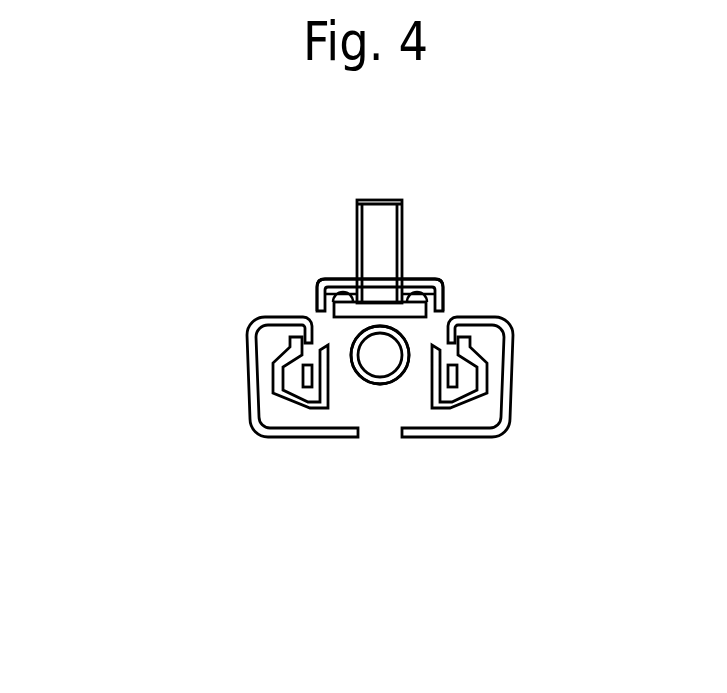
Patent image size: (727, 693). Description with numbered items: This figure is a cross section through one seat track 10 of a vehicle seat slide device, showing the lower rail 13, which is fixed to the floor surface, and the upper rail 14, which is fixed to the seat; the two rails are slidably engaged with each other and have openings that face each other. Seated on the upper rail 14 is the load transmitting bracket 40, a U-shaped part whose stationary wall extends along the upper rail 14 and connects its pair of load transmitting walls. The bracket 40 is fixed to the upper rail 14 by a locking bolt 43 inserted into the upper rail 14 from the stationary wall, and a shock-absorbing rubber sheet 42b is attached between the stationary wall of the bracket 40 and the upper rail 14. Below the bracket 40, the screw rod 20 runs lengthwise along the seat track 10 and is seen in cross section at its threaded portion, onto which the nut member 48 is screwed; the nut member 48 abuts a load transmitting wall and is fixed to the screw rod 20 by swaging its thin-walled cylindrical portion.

The seat track 10 is at (157, 255).
The lower rail 13 is at (257, 393).
The upper rail 14 is at (318, 282).
The load transmitting bracket 40 is at (440, 287).
The shock-absorbing rubber sheet 42b is at (342, 293).
The locking bolt 43 is at (385, 223).
The screw rod 20 is at (378, 358).
The nut member 48 is at (357, 376).